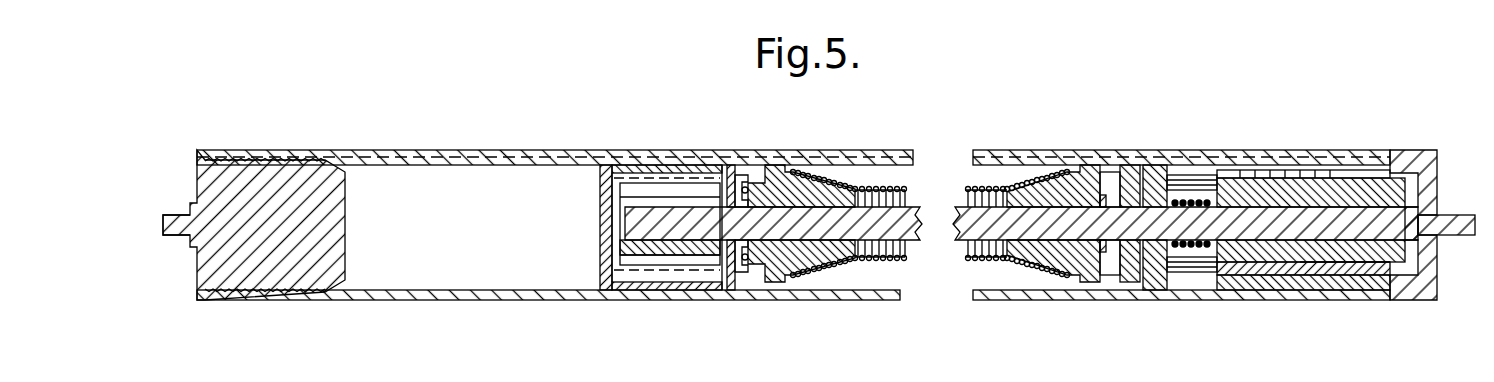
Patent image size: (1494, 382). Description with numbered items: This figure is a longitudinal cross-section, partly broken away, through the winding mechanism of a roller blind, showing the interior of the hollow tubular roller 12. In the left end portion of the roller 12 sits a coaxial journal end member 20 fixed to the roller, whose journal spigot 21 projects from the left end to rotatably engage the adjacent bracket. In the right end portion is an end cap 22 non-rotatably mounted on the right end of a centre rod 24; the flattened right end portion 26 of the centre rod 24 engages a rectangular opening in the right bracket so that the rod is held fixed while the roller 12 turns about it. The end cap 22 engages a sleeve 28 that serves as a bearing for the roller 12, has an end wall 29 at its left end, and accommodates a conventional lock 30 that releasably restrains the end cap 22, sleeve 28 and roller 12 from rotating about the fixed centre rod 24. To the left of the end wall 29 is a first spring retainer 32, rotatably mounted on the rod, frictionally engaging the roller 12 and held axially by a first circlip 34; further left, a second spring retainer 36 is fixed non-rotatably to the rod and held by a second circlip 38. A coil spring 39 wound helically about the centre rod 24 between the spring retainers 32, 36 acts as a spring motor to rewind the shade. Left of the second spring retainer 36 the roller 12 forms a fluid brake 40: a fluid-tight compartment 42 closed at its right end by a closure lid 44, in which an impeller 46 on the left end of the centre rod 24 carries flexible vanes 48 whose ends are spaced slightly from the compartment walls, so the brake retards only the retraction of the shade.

The hollow tubular roller 12 is at (1140, 152).
The journal end member 20 is at (296, 182).
The journal spigot 21 is at (184, 220).
The end cap 22 is at (1430, 182).
The centre rod 24 is at (832, 225).
The flattened right end portion 26 is at (1447, 226).
The sleeve 28 is at (1268, 283).
The end wall 29 is at (1152, 270).
The lock 30 is at (1358, 264).
The first spring retainer 32 is at (1085, 192).
The first circlip 34 is at (1112, 262).
The second spring retainer 36 is at (786, 195).
The second circlip 38 is at (745, 186).
The coil spring 39 is at (880, 190).
The fluid brake 40 is at (648, 168).
The fluid-tight compartment 42 is at (604, 165).
The closure lid 44 is at (733, 272).
The impeller 46 is at (673, 253).
The vanes 48 is at (672, 197).